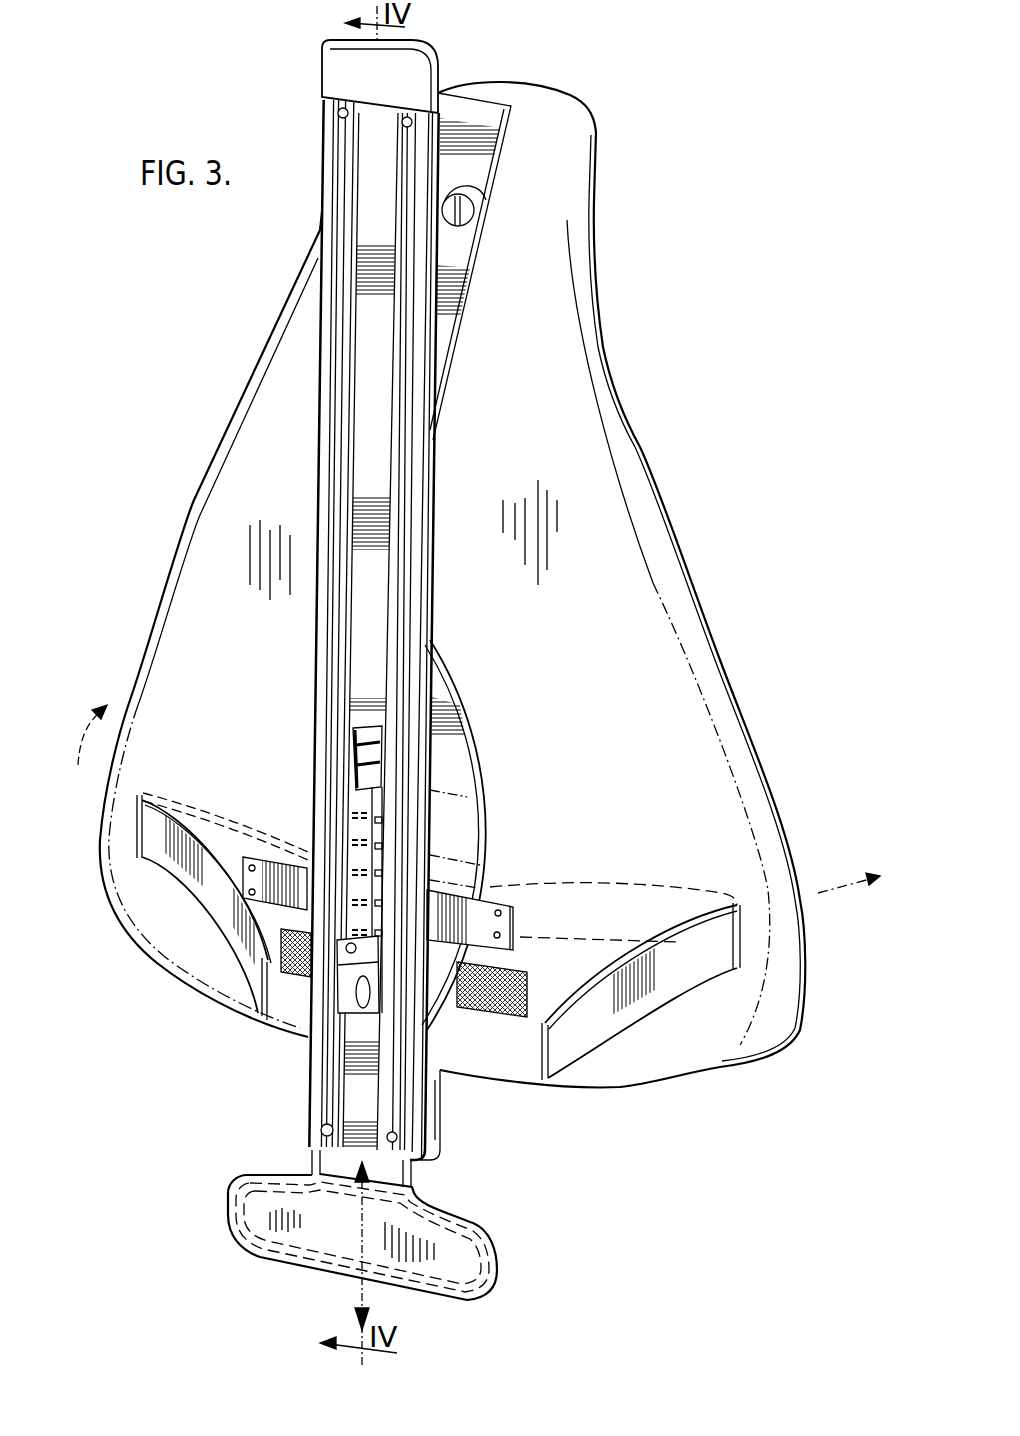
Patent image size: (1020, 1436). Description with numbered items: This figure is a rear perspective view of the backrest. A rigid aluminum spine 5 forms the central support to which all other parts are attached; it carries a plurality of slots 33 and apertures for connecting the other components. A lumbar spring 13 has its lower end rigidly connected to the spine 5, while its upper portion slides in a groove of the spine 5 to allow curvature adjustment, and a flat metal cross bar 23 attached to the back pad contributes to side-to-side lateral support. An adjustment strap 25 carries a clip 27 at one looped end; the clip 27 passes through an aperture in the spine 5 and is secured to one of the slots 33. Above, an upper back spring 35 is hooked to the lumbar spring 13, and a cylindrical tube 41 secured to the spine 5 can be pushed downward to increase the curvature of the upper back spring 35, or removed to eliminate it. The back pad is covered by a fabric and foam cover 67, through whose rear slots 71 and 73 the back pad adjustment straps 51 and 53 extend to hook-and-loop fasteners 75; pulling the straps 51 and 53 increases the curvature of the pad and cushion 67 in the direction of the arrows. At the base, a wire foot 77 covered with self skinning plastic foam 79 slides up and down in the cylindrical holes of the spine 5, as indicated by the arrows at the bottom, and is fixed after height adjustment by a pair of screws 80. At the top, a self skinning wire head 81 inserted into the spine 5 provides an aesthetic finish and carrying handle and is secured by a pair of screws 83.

The spine 5 is at (318, 193).
The lumbar spring 13 is at (463, 770).
The cross bar 23 is at (463, 907).
The adjustment strap 25 is at (353, 772).
The clip 27 is at (375, 968).
The slots 33 is at (383, 875).
The upper back spring 35 is at (467, 110).
The cylindrical tube 41 is at (462, 192).
The adjustment strap 51 is at (583, 1027).
The adjustment strap 53 is at (213, 893).
The fabric and foam cover 67 is at (703, 645).
The slot 71 is at (135, 822).
The slot 73 is at (740, 948).
The hook-and-loop fasteners 75 is at (293, 978).
The wire foot 77 is at (488, 1235).
The self skinning plastic foam 79 is at (480, 1272).
The screws 80 is at (322, 1130).
The wire head 81 is at (323, 73).
The screws 83 is at (402, 124).